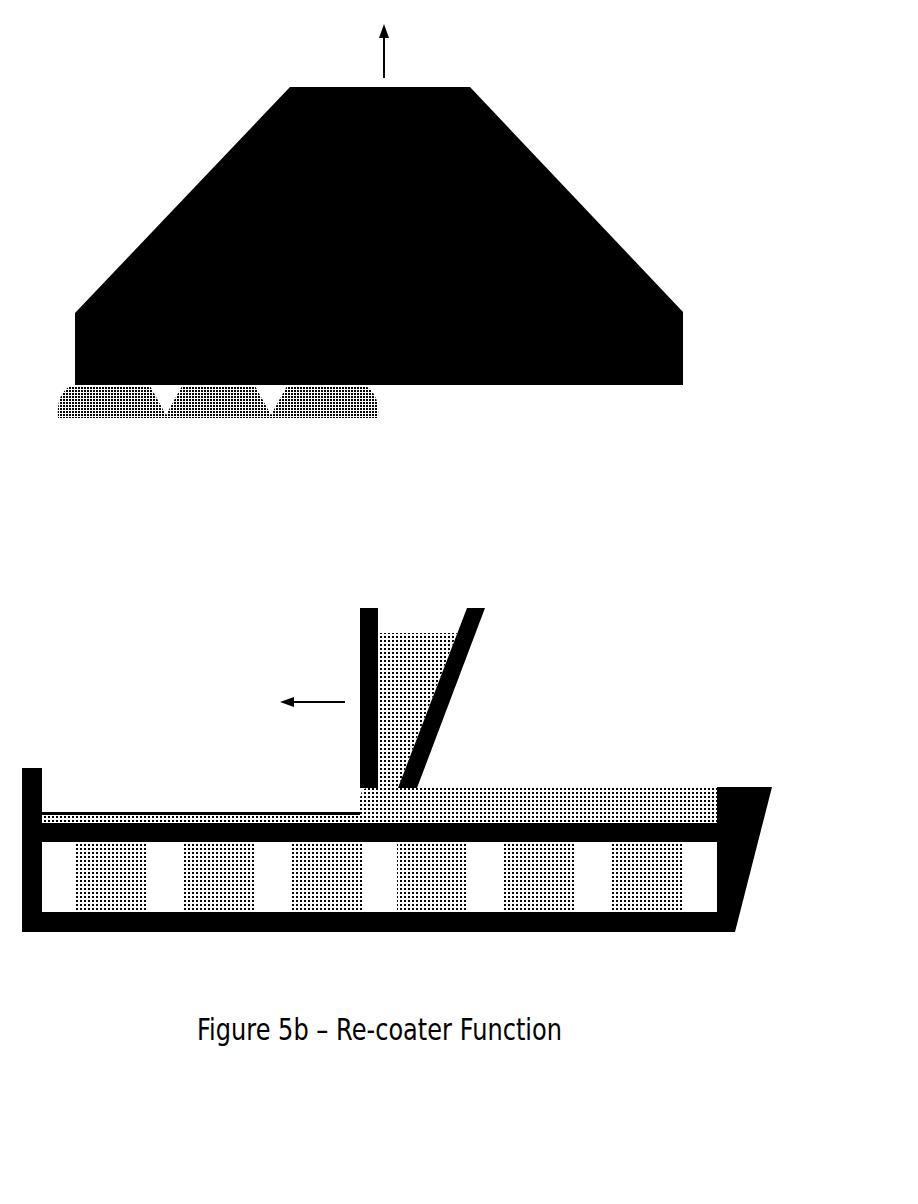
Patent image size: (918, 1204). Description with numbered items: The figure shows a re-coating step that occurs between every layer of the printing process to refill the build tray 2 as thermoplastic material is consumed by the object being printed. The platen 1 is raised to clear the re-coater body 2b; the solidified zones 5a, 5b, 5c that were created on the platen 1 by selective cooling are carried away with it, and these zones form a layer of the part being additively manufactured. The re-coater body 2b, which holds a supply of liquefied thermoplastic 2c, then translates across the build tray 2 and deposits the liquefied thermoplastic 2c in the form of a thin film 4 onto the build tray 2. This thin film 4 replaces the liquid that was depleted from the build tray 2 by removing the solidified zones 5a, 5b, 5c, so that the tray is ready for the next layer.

The platen 1 is at (550, 157).
The build tray 2 is at (33, 758).
The re-coater body 2b is at (405, 640).
The liquefied thermoplastic 2c is at (468, 678).
The thermoplastic film 4 is at (653, 800).
The solidified zone 5a is at (109, 402).
The solidified zone 5b is at (214, 402).
The solidified zone 5c is at (323, 402).